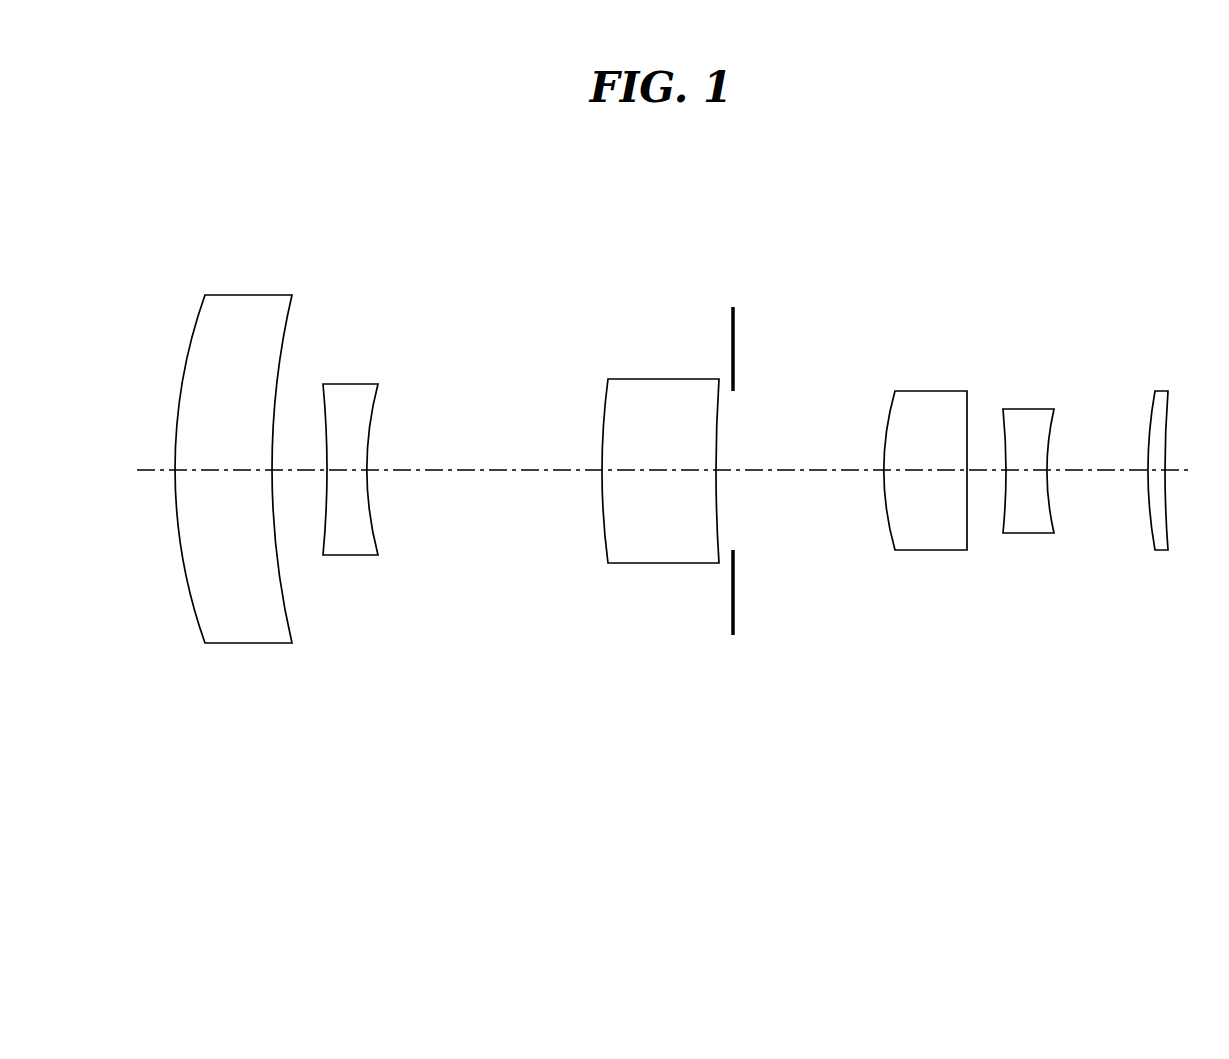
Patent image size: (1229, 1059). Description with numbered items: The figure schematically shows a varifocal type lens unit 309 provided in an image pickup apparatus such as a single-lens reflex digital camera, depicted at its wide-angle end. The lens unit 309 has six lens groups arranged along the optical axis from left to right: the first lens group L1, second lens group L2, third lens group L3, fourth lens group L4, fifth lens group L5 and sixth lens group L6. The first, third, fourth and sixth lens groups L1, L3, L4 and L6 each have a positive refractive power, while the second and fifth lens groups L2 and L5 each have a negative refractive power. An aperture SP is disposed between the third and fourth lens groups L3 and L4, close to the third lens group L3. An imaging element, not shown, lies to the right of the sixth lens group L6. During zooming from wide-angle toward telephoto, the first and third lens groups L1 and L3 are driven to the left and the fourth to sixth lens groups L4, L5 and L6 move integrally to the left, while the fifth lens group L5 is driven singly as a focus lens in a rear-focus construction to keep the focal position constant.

The varifocal type lens unit 309 is at (521, 247).
The first lens group L1 is at (296, 660).
The second lens group L2 is at (308, 660).
The third lens group L3 is at (740, 660).
The fourth lens group L4 is at (873, 660).
The fifth lens group L5 is at (983, 660).
The sixth lens group L6 is at (1128, 660).
The aperture SP is at (736, 330).